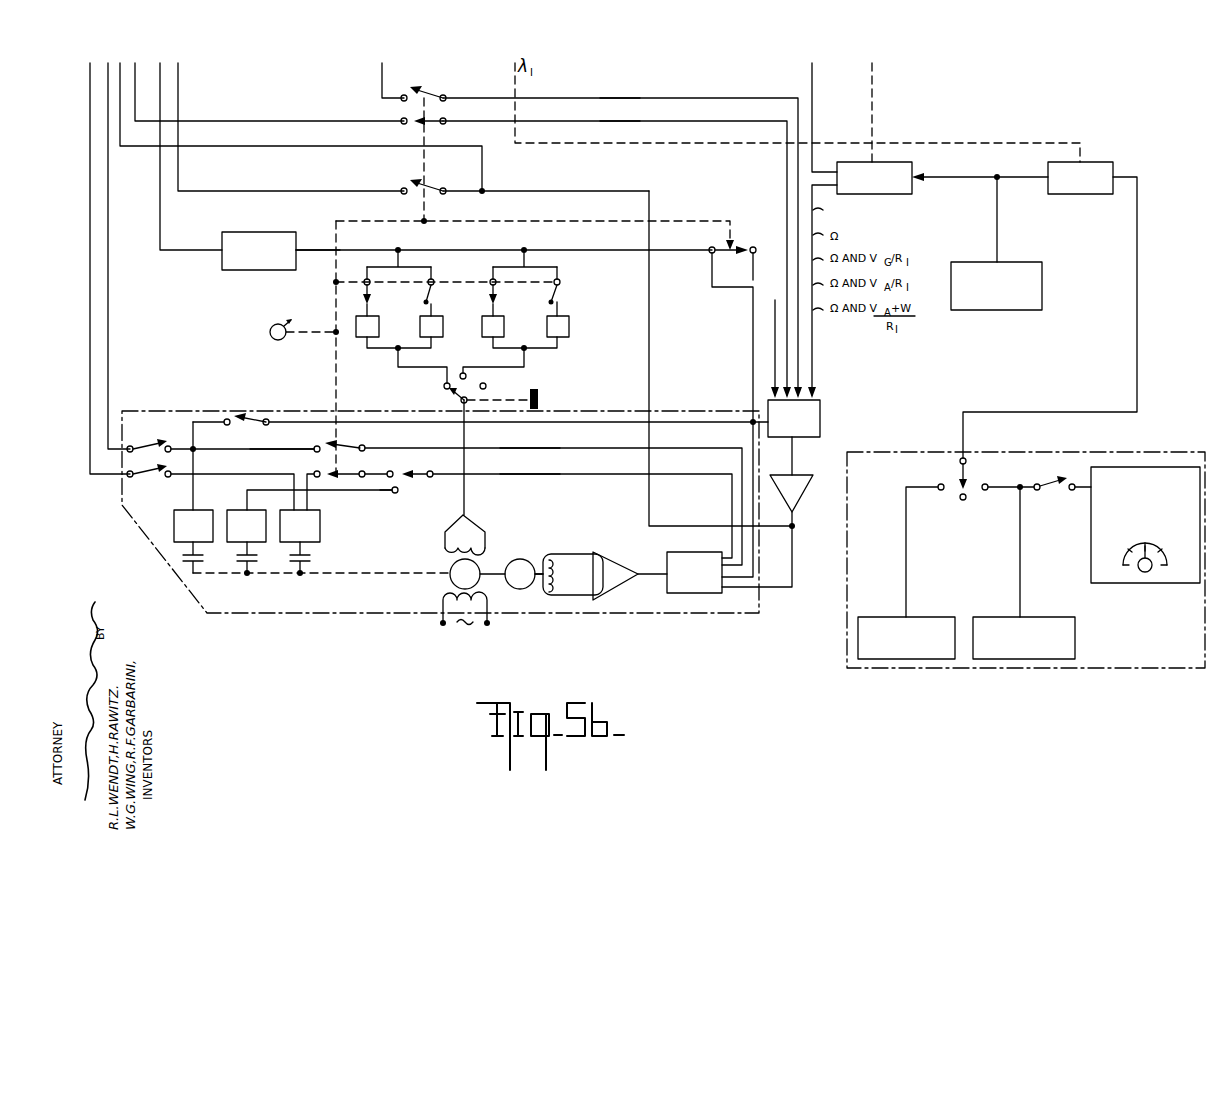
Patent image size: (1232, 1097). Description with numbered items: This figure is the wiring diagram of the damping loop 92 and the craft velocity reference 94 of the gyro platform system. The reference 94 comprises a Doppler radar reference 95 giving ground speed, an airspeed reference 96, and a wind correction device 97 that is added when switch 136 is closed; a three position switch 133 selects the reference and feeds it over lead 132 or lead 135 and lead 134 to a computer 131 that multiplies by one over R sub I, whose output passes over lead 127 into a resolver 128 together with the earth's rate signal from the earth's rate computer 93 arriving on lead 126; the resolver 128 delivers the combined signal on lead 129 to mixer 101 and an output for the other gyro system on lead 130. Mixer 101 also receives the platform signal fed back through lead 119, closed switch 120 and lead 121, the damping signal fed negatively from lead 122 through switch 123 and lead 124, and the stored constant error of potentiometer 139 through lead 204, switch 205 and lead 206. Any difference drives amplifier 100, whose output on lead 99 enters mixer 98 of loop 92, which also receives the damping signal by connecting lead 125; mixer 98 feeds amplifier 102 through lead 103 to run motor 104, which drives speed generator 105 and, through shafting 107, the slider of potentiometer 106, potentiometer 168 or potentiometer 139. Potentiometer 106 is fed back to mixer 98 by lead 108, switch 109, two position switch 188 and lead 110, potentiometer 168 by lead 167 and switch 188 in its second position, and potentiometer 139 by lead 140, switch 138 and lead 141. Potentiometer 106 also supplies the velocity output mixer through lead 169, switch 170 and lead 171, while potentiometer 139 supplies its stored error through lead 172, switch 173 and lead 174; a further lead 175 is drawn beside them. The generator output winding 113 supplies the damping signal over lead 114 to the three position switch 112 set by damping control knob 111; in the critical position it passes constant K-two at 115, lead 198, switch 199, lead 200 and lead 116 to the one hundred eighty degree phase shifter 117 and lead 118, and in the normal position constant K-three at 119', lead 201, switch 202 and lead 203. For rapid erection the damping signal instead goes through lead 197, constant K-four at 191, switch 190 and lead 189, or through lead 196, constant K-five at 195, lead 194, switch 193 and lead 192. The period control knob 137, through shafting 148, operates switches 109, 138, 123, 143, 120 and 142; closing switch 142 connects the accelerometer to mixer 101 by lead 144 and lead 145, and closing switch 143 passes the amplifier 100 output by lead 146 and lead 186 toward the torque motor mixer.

The damping loop 92 is at (440, 512).
The earth's rate computer 93 is at (1042, 288).
The craft velocity reference 94 is at (1026, 571).
The Doppler radar reference 95 is at (941, 617).
The airspeed reference 96 is at (1057, 617).
The wind correction device 97 is at (1134, 583).
The mixer 98 is at (704, 594).
The lead 99 is at (792, 588).
The amplifier 100 is at (805, 502).
The mixer 101 is at (820, 418).
The amplifier 102 is at (624, 556).
The connecting lead 103 is at (654, 572).
The motor 104 is at (520, 589).
The speed generator 105 is at (478, 565).
The potentiometer 106 is at (300, 543).
The shafting 107 is at (410, 572).
The lead 108 is at (313, 498).
The switch 109 is at (357, 473).
The lead 110 is at (559, 475).
The damping control knob 111 is at (540, 392).
The three position switch 112 is at (446, 392).
The generator output winding 113 is at (488, 533).
The lead 114 is at (472, 494).
The constant K-two 115 is at (364, 340).
The lead 116 is at (314, 246).
The 180 degree phase shifter 117 is at (270, 232).
The lead 118 is at (160, 96).
The lead 119 is at (271, 95).
The constant K-three 119' is at (513, 323).
The switch 120 is at (440, 126).
The lead 121 is at (620, 120).
The lead 122 is at (571, 250).
The switch 123 is at (737, 238).
The lead 124 is at (768, 249).
The connecting lead 125 is at (753, 342).
The lead 126 is at (997, 226).
The lead 127 is at (957, 186).
The resolver 128 is at (912, 169).
The lead 129 is at (816, 210).
The lead 130 is at (810, 78).
The computer 131 is at (1104, 162).
The lead 132 is at (906, 553).
The three position switch 133 is at (958, 478).
The lead 134 is at (1137, 242).
The lead 135 is at (1020, 562).
The switch 136 is at (1039, 482).
The period control knob 137 is at (284, 340).
The switch 138 is at (362, 448).
The potentiometer 139 is at (193, 541).
The lead 140 is at (270, 449).
The lead 141 is at (559, 450).
The switch 142 is at (443, 93).
The switch 143 is at (445, 182).
The lead 144 is at (381, 90).
The lead 145 is at (620, 96).
The lead 146 is at (622, 191).
The shafting 148 is at (408, 220).
The lead 167 is at (393, 492).
The potentiometer 168 is at (246, 543).
The lead 169 is at (268, 474).
The switch 170 is at (142, 478).
The lead 171 is at (90, 78).
The lead 172 is at (193, 421).
The switch 173 is at (146, 446).
The lead 174 is at (108, 98).
The lead 175 is at (120, 126).
The lead 186 is at (178, 76).
The two position switch 188 is at (396, 477).
The lead 189 is at (434, 280).
The switch 190 is at (370, 286).
The constant K-four 191 is at (420, 326).
The lead 192 is at (557, 268).
The switch 193 is at (560, 291).
The lead 194 is at (560, 308).
The constant K-five 195 is at (569, 327).
The lead 196 is at (556, 350).
The lead 197 is at (388, 364).
The lead 198 is at (360, 296).
The switch 199 is at (335, 283).
The lead 200 is at (395, 260).
The lead 201 is at (491, 306).
The switch 202 is at (490, 292).
The lead 203 is at (490, 282).
The lead 204 is at (247, 490).
The switch 205 is at (244, 416).
The lead 206 is at (280, 420).